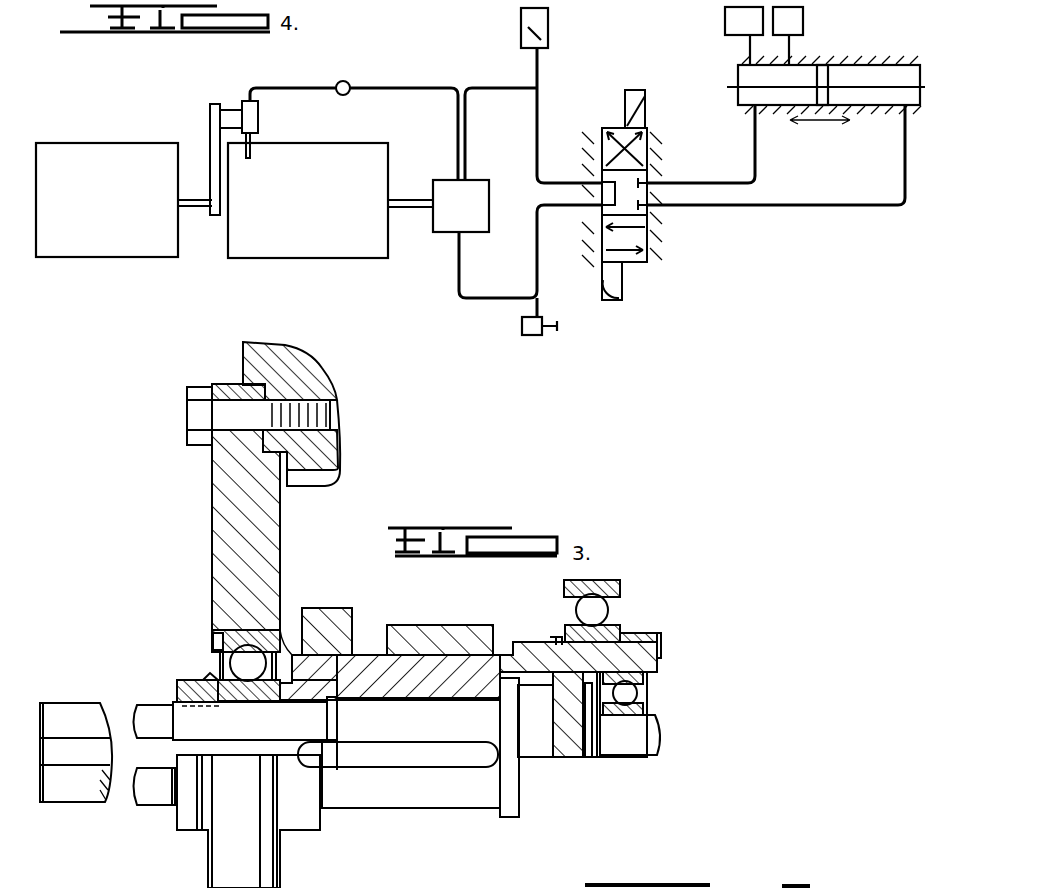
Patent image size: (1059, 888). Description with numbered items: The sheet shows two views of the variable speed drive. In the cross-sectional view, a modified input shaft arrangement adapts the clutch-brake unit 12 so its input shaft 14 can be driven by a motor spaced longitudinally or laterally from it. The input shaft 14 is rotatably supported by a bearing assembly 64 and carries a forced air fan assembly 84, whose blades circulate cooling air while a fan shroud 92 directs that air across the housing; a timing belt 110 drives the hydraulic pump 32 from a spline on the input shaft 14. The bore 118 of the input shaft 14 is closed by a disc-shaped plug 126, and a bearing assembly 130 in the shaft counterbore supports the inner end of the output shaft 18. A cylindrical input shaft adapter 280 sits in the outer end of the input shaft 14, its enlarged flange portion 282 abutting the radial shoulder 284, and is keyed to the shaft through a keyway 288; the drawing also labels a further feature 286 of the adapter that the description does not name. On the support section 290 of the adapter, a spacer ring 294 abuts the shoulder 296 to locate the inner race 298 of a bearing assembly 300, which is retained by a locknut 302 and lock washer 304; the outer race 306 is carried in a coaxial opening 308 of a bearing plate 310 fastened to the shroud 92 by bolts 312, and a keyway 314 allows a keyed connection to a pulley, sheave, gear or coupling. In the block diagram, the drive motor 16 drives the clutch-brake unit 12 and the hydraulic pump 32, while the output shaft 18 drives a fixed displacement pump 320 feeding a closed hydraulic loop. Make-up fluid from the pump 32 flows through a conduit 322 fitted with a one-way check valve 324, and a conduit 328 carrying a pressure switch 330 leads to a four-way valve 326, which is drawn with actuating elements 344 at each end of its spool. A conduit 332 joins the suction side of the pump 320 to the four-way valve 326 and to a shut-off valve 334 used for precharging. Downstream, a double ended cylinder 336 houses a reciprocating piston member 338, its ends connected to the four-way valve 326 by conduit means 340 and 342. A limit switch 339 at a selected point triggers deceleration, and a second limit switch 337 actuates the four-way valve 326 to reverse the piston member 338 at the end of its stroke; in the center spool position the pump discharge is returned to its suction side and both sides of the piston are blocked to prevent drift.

In FIG. 4, the clutch-brake unit 12 is at (352, 252).
In FIG. 4, the input shaft 14 is at (200, 210).
In FIG. 3, the input shaft 14 is at (520, 650).
In FIG. 4, the drive motor 16 is at (122, 240).
In FIG. 4, the output shaft 18 is at (403, 210).
In FIG. 3, the output shaft 18 is at (666, 732).
In FIG. 4, the hydraulic pump 32 is at (258, 122).
In FIG. 4, the fixed displacement pump 320 is at (456, 178).
In FIG. 4, the conduit 322 is at (450, 95).
In FIG. 4, the one-way check valve 324 is at (346, 82).
In FIG. 4, the four-way valve 326 is at (650, 134).
In FIG. 4, the conduit 328 is at (536, 114).
In FIG. 4, the pressure switch 330 is at (549, 26).
In FIG. 4, the conduit 332 is at (468, 284).
In FIG. 4, the shut-off valve 334 is at (536, 336).
In FIG. 4, the double ended cylinder 336 is at (862, 60).
In FIG. 4, the second limit switch 337 is at (725, 20).
In FIG. 4, the reciprocating piston member 338 is at (872, 65).
In FIG. 4, the limit switch 339 is at (803, 25).
In FIG. 4, the conduit means 340 is at (758, 165).
In FIG. 4, the conduit means 342 is at (848, 184).
In FIG. 4, the solenoid 344 is at (645, 100).
In FIG. 3, the bearing assembly 64 is at (612, 612).
In FIG. 3, the fan assembly 84 is at (455, 624).
In FIG. 3, the fan shroud 92 is at (303, 363).
In FIG. 3, the timing belt 110 is at (345, 607).
In FIG. 3, the bore 118 is at (440, 715).
In FIG. 3, the disc-shaped plug 126 is at (572, 758).
In FIG. 3, the bearing assembly 130 is at (650, 692).
In FIG. 3, the input shaft adapter 280 is at (391, 828).
In FIG. 3, the enlarged flange portion 282 is at (526, 822).
In FIG. 3, the radial shoulder 284 is at (499, 666).
In FIG. 3, the shaft 286 is at (425, 812).
In FIG. 3, the keyway 288 is at (410, 772).
In FIG. 3, the support section 290 is at (262, 735).
In FIG. 3, the spacer ring 294 is at (361, 741).
In FIG. 3, the shoulder 296 is at (339, 677).
In FIG. 3, the inner race 298 is at (307, 718).
In FIG. 3, the bearing assembly 300 is at (222, 662).
In FIG. 3, the locknut 302 is at (177, 690).
In FIG. 3, the lock washer 304 is at (208, 678).
In FIG. 3, the outer race 306 is at (287, 630).
In FIG. 3, the coaxial opening 308 is at (220, 633).
In FIG. 3, the bearing plate 310 is at (262, 528).
In FIG. 3, the bolts 312 is at (187, 412).
In FIG. 3, the keyway 314 is at (80, 760).